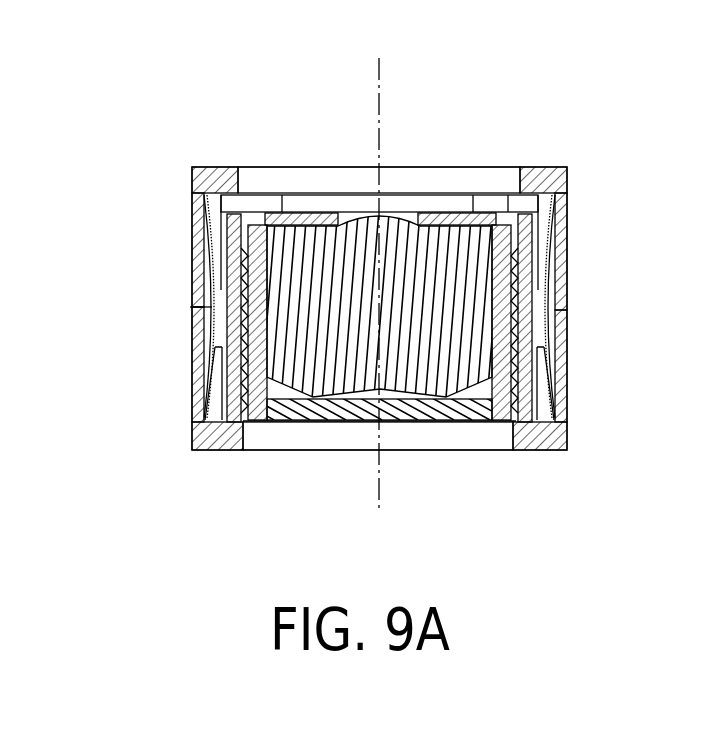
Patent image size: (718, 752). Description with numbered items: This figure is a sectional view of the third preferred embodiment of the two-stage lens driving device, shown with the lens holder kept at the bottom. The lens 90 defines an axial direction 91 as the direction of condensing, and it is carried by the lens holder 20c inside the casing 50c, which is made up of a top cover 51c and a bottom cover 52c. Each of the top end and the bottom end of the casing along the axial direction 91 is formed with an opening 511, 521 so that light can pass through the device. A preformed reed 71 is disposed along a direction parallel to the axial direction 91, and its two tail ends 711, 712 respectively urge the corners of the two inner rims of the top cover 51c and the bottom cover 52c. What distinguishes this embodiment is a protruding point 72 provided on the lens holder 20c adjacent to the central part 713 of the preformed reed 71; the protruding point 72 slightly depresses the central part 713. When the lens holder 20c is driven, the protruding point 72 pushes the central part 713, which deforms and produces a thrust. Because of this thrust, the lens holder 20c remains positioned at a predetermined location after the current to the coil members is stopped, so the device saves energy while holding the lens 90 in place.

The lens 90 is at (307, 214).
The axial direction 91 is at (381, 88).
The opening 511 is at (423, 177).
The opening 521 is at (455, 447).
The casing 50c is at (105, 213).
The top cover 51c is at (192, 242).
The bottom cover 52c is at (192, 372).
The lens holder 20c is at (205, 410).
The preformed reed 71 is at (542, 323).
The tail end 711 is at (568, 194).
The tail end 712 is at (567, 402).
The central part 713 is at (541, 310).
The protruding point 72 is at (541, 254).